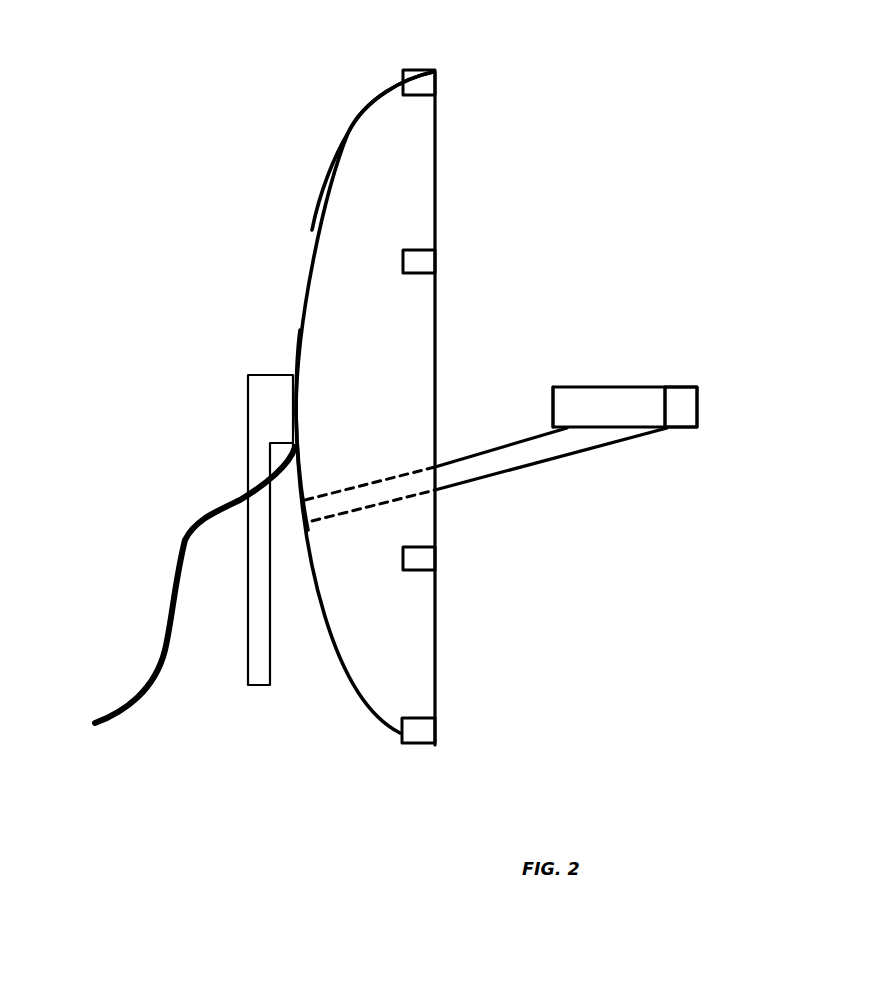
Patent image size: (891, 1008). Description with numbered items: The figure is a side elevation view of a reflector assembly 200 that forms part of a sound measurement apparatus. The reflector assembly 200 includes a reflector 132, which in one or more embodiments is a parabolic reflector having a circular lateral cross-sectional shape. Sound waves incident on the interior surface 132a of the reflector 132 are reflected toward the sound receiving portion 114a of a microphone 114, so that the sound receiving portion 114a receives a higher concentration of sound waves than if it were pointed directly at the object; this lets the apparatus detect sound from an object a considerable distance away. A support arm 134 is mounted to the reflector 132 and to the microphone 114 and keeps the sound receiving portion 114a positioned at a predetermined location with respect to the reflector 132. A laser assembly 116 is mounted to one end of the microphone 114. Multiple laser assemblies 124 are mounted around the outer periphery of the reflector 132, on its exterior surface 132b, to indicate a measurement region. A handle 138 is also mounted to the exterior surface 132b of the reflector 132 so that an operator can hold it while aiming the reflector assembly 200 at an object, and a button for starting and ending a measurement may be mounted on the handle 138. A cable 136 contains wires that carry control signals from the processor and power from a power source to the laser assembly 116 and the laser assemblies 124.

The reflector assembly 200 is at (777, 107).
The reflector 132 is at (340, 152).
The exterior surface 132b is at (356, 116).
The interior surface 132a is at (307, 339).
The laser assemblies 124 is at (418, 83).
The handle 138 is at (247, 405).
The cable 136 is at (190, 530).
The support arm 134 is at (542, 450).
The microphone 114 is at (608, 382).
The sound receiving portion 114a is at (553, 407).
The laser assembly 116 is at (688, 405).